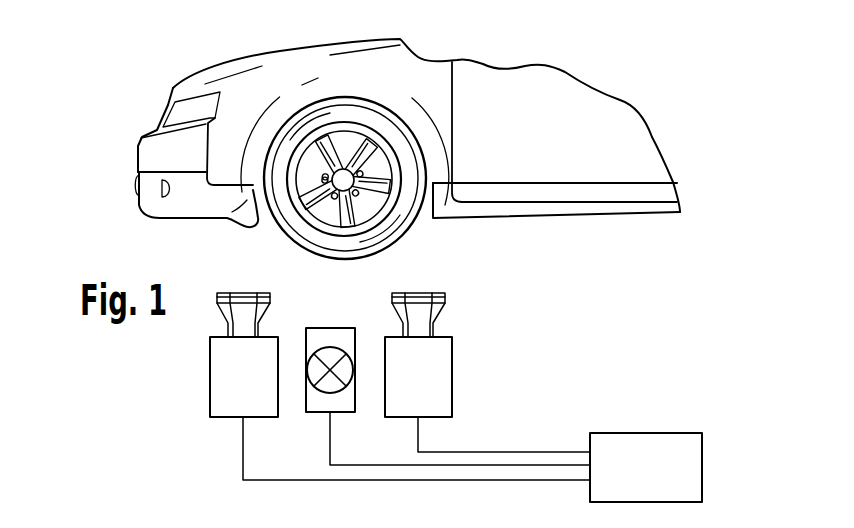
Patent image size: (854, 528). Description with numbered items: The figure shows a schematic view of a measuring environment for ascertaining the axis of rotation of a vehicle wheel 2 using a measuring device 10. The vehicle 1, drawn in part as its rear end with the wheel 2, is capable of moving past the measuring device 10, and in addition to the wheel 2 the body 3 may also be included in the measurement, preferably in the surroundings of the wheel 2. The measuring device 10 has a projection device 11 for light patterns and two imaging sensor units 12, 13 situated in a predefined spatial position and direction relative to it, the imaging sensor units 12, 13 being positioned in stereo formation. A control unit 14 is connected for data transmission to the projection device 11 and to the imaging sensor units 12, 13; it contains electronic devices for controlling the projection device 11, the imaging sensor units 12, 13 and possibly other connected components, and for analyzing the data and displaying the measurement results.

The vehicle 1 is at (146, 50).
The vehicle wheel 2 is at (393, 228).
The body 3 is at (588, 208).
The measuring device 10 is at (603, 316).
The projection device 11 is at (343, 400).
The imaging sensor unit 12 is at (435, 378).
The imaging sensor unit 13 is at (232, 377).
The control unit 14 is at (680, 468).